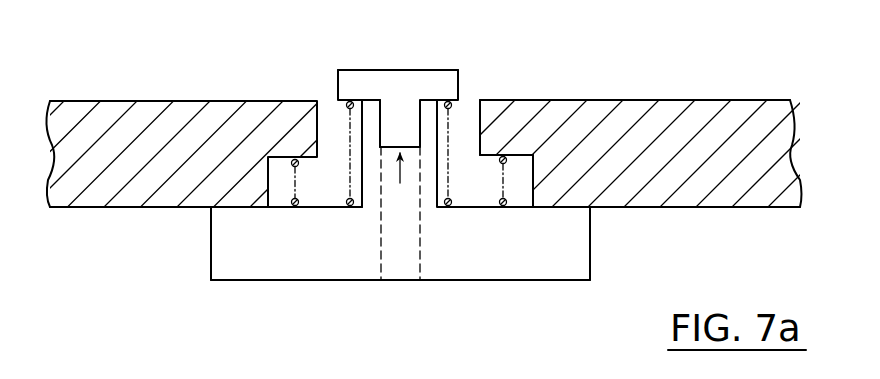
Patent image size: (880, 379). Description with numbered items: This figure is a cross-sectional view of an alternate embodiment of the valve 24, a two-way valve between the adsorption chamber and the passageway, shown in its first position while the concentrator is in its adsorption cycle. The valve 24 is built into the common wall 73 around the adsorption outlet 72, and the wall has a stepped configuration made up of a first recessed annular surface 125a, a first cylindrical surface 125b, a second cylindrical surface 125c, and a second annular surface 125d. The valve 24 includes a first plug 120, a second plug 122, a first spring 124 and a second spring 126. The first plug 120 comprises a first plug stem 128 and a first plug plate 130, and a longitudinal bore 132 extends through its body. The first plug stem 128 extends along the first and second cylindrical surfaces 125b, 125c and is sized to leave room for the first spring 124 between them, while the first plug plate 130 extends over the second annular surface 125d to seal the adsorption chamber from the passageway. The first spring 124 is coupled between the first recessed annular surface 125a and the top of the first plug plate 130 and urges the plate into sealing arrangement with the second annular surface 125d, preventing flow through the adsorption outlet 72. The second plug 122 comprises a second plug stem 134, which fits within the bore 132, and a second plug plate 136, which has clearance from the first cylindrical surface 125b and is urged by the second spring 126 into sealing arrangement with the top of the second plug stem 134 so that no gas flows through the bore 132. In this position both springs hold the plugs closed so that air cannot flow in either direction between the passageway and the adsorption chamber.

The valve 24 is at (212, 293).
The adsorption outlet 72 is at (466, 97).
The common wall 73 is at (147, 114).
The first plug 120 is at (525, 270).
The second plug 122 is at (354, 73).
The first spring 124 is at (293, 176).
The first recessed annular surface 125a is at (531, 153).
The first cylindrical surface 125b is at (483, 118).
The second cylindrical surface 125c is at (533, 170).
The second annular surface 125d is at (555, 208).
The second spring 126 is at (450, 177).
The first plug stem 128 is at (372, 177).
The first plug plate 130 is at (310, 267).
The longitudinal bore 132 is at (406, 270).
The second plug stem 134 is at (387, 122).
The second plug plate 136 is at (355, 78).